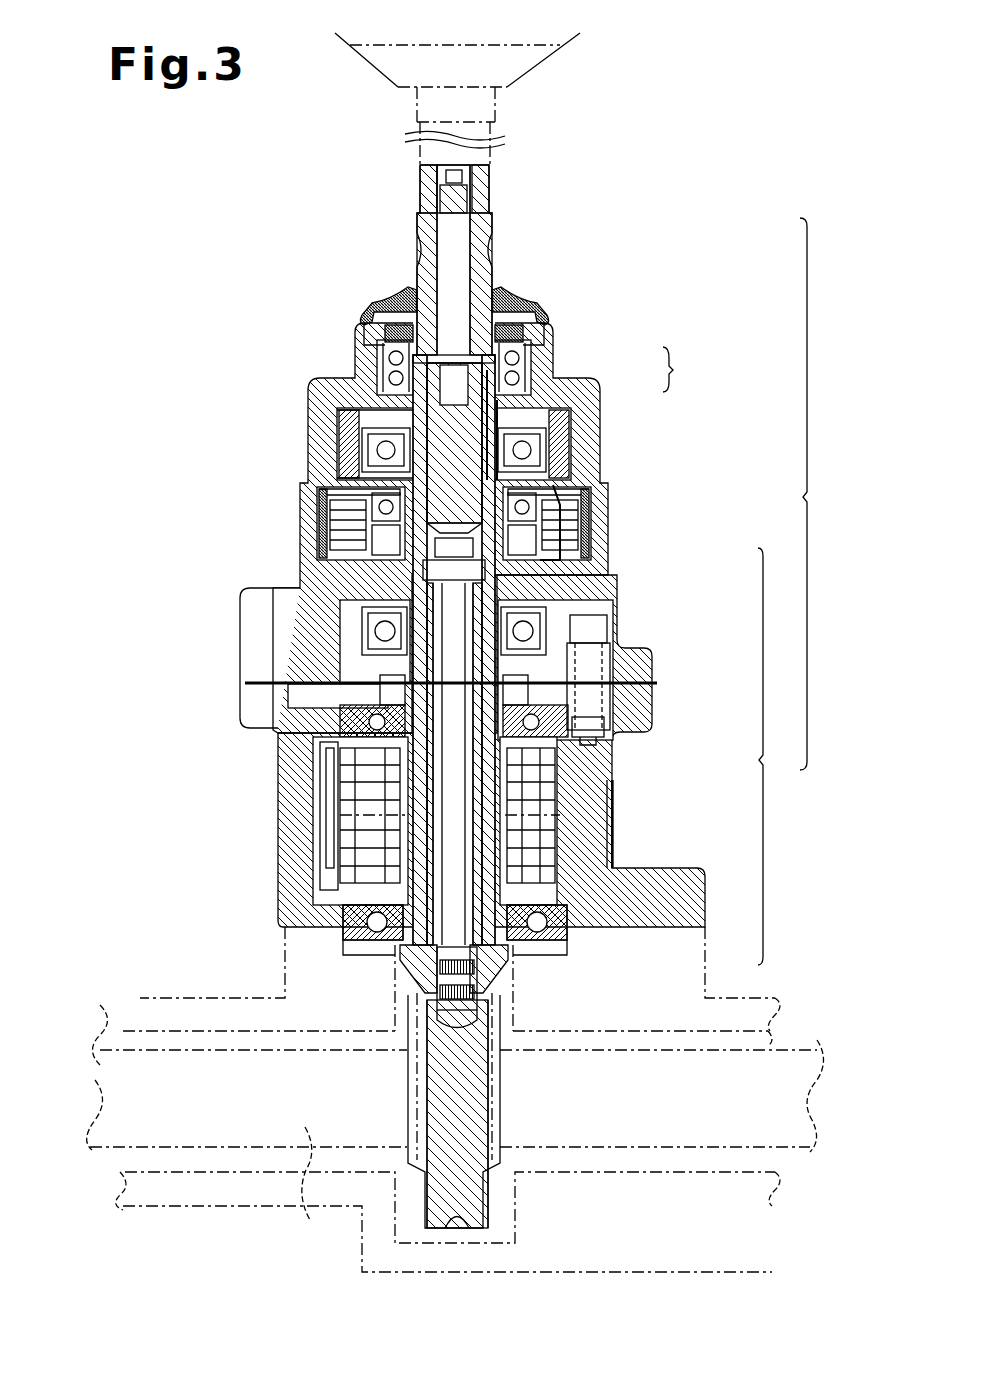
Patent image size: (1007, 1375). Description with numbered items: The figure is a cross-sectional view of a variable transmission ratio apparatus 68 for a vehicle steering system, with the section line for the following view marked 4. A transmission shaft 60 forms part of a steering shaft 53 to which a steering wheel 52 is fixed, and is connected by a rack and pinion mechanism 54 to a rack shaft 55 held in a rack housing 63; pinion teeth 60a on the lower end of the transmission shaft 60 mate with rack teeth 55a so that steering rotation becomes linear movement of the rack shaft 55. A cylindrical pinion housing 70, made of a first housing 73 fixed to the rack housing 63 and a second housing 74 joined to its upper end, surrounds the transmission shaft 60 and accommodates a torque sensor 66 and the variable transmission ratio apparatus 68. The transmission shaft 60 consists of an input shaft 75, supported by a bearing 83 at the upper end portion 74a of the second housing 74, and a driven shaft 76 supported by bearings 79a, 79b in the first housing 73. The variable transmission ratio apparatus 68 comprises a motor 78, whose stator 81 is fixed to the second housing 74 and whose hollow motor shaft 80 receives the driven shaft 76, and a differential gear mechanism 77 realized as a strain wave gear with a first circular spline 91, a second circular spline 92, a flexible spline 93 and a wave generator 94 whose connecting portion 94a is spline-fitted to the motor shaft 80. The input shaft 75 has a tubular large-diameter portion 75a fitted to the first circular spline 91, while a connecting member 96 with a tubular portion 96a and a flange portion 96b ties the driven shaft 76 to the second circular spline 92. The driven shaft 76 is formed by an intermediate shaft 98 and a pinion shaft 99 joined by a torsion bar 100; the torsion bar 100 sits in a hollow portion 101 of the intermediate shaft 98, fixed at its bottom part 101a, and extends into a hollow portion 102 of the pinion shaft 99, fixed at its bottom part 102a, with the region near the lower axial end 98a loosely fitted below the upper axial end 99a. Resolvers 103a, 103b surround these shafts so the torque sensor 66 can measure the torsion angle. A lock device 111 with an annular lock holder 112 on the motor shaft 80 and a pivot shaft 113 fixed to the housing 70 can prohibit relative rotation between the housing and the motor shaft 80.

The steering wheel 52 is at (537, 63).
The steering shaft 53 is at (508, 152).
The rack and pinion mechanism 54 is at (814, 1004).
The rack shaft 55 is at (128, 1001).
The rack teeth 55a is at (226, 1189).
The transmission shaft 60 is at (824, 494).
The pinion teeth 60a is at (497, 1105).
The rack housing 63 is at (128, 997).
The torque sensor 66 is at (566, 818).
The variable transmission ratio apparatus 68 is at (271, 322).
The pinion housing 70 is at (242, 620).
The first housing 73 is at (285, 690).
The second housing 74 is at (290, 660).
The upper end portion 74a is at (368, 343).
The input shaft 75 is at (483, 222).
The large-diameter portion 75a is at (560, 385).
The driven shaft 76 is at (781, 756).
The differential gear mechanism 77 is at (467, 497).
The motor 78 is at (322, 530).
The bearing 79a is at (600, 740).
The bearing 79b is at (566, 934).
The motor shaft 80 is at (340, 548).
The stator 81 is at (335, 565).
The bearing 83 is at (532, 318).
The first circular spline 91 is at (375, 462).
The second circular spline 92 is at (350, 440).
The flexible spline 93 is at (340, 413).
The wave generator 94 is at (390, 427).
The connecting portion 94a is at (530, 370).
The connecting member 96 is at (687, 369).
The tubular portion 96a is at (487, 385).
The flange portion 96b is at (513, 415).
The intermediate shaft 98 is at (560, 557).
The lower axial end 98a is at (407, 977).
The pinion shaft 99 is at (495, 965).
The upper axial end 99a is at (540, 830).
The torsion bar 100 is at (505, 782).
The hollow portion 101 is at (590, 700).
The bottom part 101a is at (548, 600).
The hollow portion 102 is at (375, 935).
The bottom part 102a is at (470, 1000).
The first resolver 103a is at (380, 775).
The second resolver 103b is at (380, 838).
The lock device 111 is at (600, 660).
The lock holder 112 is at (380, 692).
The pivot shaft 113 is at (612, 687).
The section line 4- 4 is at (112, 684).